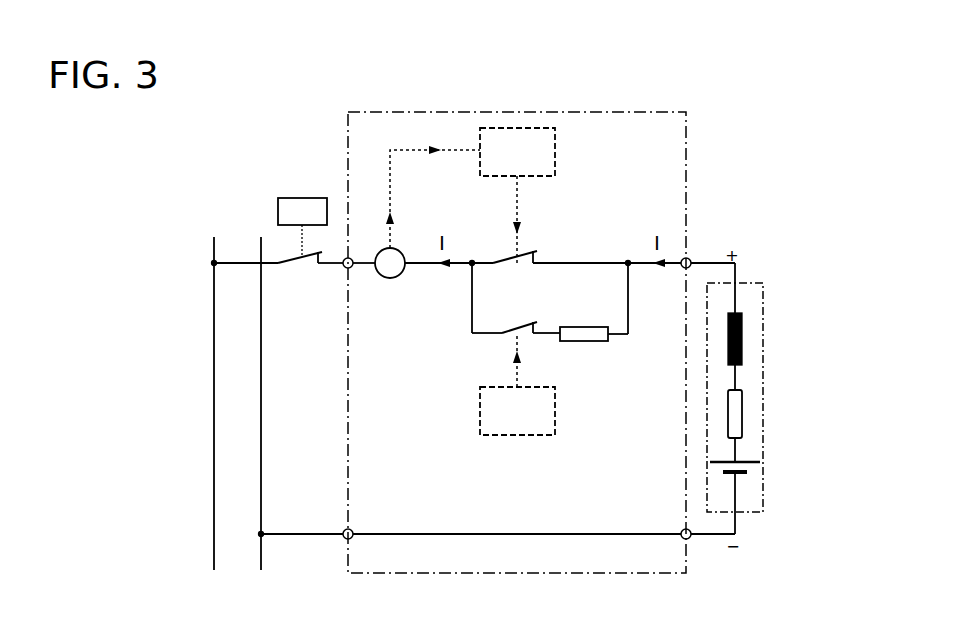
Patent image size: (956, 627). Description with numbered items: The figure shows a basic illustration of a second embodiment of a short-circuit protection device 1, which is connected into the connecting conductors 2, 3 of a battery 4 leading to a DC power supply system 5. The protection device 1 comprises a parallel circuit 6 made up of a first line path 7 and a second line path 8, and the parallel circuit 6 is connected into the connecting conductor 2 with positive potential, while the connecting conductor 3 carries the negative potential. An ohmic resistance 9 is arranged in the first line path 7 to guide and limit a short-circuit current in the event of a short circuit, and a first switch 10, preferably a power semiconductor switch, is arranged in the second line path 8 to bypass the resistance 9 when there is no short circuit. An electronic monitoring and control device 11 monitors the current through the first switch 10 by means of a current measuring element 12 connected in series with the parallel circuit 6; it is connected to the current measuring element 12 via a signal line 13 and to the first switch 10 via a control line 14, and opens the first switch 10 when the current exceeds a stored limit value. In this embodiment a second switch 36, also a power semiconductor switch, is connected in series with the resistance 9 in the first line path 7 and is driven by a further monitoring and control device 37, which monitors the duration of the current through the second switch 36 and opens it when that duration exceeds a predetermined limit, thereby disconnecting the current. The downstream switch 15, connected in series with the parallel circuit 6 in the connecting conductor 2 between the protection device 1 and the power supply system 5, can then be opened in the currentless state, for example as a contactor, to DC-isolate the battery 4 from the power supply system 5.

The short-circuit protection device 1 is at (686, 153).
The connecting conductor 2 is at (690, 258).
The connecting conductor 3 is at (692, 540).
The battery 4 is at (764, 362).
The DC power supply system 5 is at (232, 208).
The parallel circuit 6 is at (630, 344).
The first line path 7 is at (628, 306).
The second line path 8 is at (578, 263).
The ohmic resistance 9 is at (585, 325).
The first switch 10 is at (508, 255).
The monitoring and control device 11 is at (555, 157).
The current measuring element 12 is at (393, 278).
The signal line 13 is at (392, 187).
The control line 14 is at (517, 200).
The switch 15 is at (313, 197).
The second switch 36 is at (505, 327).
The monitoring and control device 37 is at (555, 418).